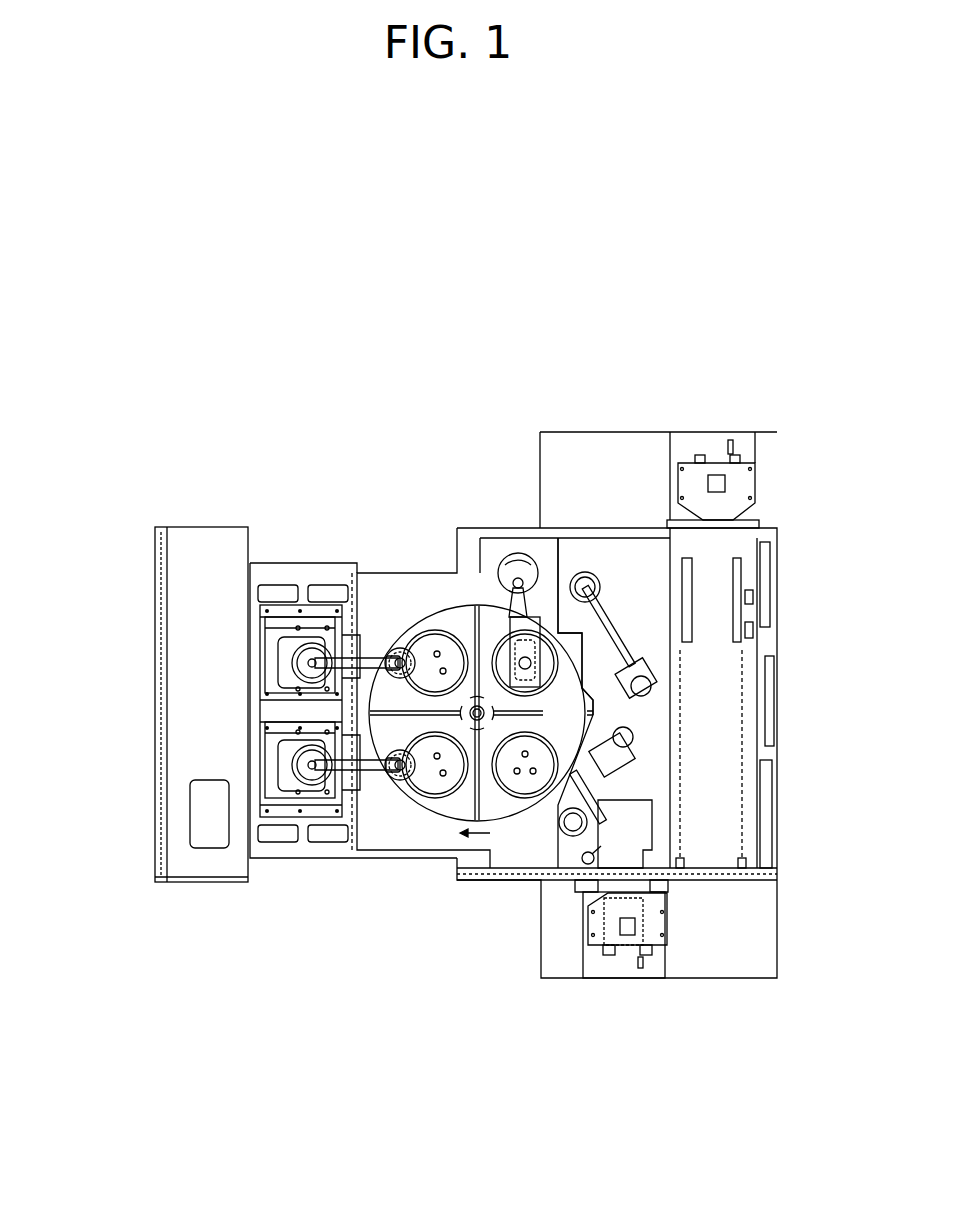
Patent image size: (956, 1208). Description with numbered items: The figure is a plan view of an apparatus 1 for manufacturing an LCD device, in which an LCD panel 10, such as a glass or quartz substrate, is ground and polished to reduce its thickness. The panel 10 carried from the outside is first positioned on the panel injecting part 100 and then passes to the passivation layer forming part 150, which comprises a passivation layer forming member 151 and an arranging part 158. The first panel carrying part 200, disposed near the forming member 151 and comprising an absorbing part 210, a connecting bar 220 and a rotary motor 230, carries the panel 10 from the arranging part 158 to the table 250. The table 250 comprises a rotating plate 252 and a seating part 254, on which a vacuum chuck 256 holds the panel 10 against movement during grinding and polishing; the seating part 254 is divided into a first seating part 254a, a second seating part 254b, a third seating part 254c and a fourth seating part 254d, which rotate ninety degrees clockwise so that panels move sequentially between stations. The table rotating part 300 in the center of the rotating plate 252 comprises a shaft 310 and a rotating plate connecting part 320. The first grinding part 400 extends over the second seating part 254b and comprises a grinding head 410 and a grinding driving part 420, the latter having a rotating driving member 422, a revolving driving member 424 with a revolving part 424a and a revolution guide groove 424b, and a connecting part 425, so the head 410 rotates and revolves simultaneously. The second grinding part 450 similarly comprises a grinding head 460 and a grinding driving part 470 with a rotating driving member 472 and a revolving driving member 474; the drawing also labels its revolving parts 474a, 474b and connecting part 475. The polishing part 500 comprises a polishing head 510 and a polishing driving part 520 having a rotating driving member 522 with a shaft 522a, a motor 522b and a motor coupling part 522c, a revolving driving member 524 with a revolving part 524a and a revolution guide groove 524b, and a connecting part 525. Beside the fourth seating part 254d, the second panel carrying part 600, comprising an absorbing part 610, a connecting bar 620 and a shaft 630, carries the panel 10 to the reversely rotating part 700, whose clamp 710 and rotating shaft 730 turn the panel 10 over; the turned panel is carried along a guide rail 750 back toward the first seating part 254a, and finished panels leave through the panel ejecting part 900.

The apparatus for manufacturing an LCD device 1 is at (210, 390).
The LCD panel 10 is at (598, 866).
The panel injecting part 100 is at (576, 964).
The passivation layer forming part 150 is at (645, 1033).
The passivation layer forming member 151 is at (591, 897).
The arranging part 158 is at (630, 930).
The first panel carrying part 200 is at (853, 803).
The absorbing part 210 is at (637, 857).
The connecting bar 220 is at (596, 824).
The rotary motor 230 is at (622, 800).
The table 250 is at (396, 934).
The rotating plate 252 is at (455, 832).
The seating part 254 is at (492, 830).
The first seating part 254a is at (525, 765).
The second seating part 254b is at (420, 800).
The third seating part 254c is at (420, 676).
The fourth seating part 254d is at (538, 676).
The vacuum chuck 256 is at (534, 774).
The table rotating part 300 is at (348, 533).
The shaft 310 is at (437, 630).
The rotating plate connecting part 320 is at (398, 648).
The first grinding part 400 is at (45, 713).
The grinding head 410 is at (278, 740).
The grinding driving part 420 is at (98, 757).
The rotating driving member 422 is at (330, 800).
The revolving driving member 424 is at (148, 740).
The revolving part 424a is at (296, 755).
The revolution guide groove 424b is at (335, 768).
The connecting part 425 is at (345, 762).
The second grinding part 450 is at (45, 572).
The grinding head 460 is at (278, 637).
The grinding driving part 470 is at (98, 618).
The rotating driving member 472 is at (330, 700).
The revolving driving member 474 is at (148, 600).
The first outer roller 474a is at (296, 652).
The first inner roller 474b is at (335, 666).
The first arm 475 is at (345, 660).
The polishing part 500 is at (497, 368).
The polishing head 510 is at (455, 610).
The polishing driving part 520 is at (592, 404).
The rotating driving member 522 is at (670, 443).
The shaft 522a is at (540, 640).
The motor 522b is at (562, 660).
The motor coupling part 522c is at (538, 575).
The revolving driving member 524 is at (492, 443).
The revolving part 524a is at (520, 620).
The revolution guide groove 524b is at (511, 622).
The connecting part 525 is at (470, 600).
The second panel carrying part 600 is at (853, 660).
The absorbing part 610 is at (602, 590).
The connecting bar 620 is at (652, 686).
The shaft 630 is at (622, 638).
The reversely rotating part 700 is at (853, 578).
The clamp 710 is at (749, 594).
The rotating shaft 730 is at (749, 628).
The guide rail 750 is at (634, 738).
The panel ejecting part 900 is at (768, 482).